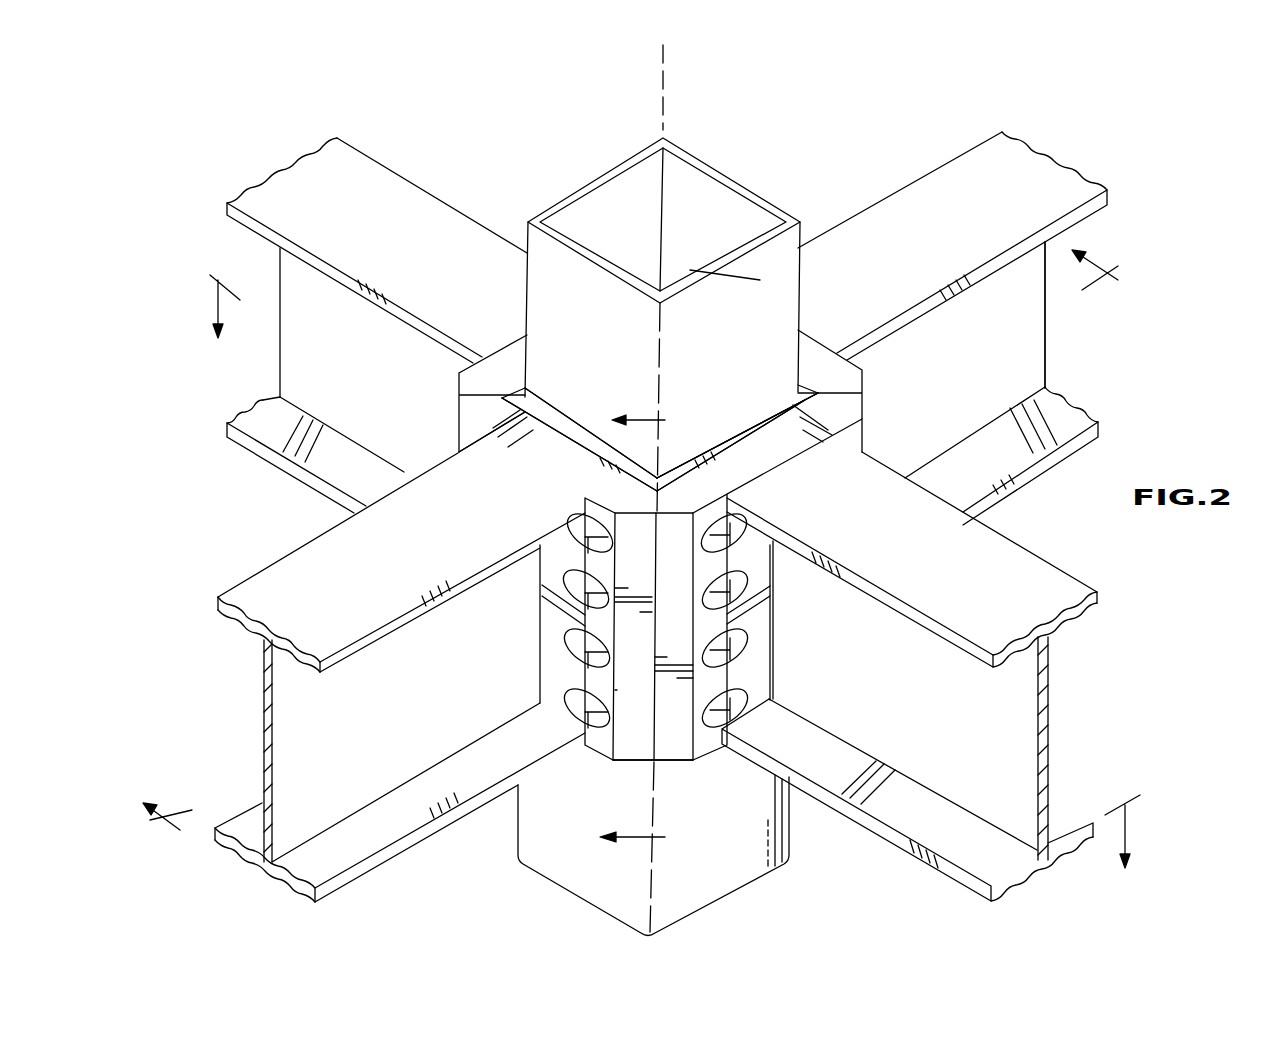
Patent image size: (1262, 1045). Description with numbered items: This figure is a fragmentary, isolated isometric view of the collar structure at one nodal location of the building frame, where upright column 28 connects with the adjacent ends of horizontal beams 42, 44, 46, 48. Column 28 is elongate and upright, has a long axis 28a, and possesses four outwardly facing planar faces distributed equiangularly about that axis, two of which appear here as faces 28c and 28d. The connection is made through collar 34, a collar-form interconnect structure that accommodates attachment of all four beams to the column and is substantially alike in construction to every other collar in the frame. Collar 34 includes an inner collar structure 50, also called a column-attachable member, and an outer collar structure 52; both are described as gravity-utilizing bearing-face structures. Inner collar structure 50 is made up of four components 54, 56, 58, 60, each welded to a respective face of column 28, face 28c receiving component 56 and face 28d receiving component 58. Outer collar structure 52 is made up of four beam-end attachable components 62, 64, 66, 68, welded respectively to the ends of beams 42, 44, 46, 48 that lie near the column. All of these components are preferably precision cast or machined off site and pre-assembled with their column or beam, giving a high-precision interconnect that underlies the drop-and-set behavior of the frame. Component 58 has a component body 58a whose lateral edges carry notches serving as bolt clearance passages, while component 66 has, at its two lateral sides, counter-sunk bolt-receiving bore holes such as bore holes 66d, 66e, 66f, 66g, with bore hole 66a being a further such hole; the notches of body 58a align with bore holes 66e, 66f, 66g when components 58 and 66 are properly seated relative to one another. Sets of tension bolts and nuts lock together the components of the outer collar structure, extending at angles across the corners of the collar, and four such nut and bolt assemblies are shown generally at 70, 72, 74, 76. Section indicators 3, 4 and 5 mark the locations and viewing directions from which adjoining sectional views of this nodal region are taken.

The column 28 is at (803, 221).
The long axis of column 28a is at (665, 103).
The planar face of column 28c is at (782, 270).
The planar face of column 28d is at (587, 288).
The beam 42 is at (975, 160).
The beam 44 is at (1062, 584).
The beam 46 is at (410, 848).
The beam 48 is at (300, 160).
The collar 34 is at (884, 403).
The inner collar structure 50 is at (778, 400).
The outer collar structure 52 is at (830, 418).
The inner collar component 54 is at (803, 390).
The inner collar component 56 is at (755, 440).
The inner collar component 58 is at (541, 391).
The component body 58a is at (548, 445).
The inner collar component 60 is at (517, 390).
The outer collar component 62 is at (840, 383).
The outer collar component 64 is at (738, 472).
The outer collar component 66 is at (572, 474).
The slotted hole 66a is at (562, 621).
The bolt-receiving bore hole 66d is at (578, 522).
The bolt-receiving bore hole 66e is at (575, 596).
The bolt-receiving bore hole 66f is at (567, 656).
The bolt-receiving bore hole 66g is at (575, 715).
The outer collar component 68 is at (482, 383).
The nut and bolt assembly 70 is at (617, 578).
The nut and bolt assembly 72 is at (617, 637).
The nut and bolt assembly 74 is at (617, 692).
The nut and bolt assembly 76 is at (617, 748).
The section line 3 is at (641, 551).
The section line 4 is at (671, 565).
The section line 5 is at (645, 629).